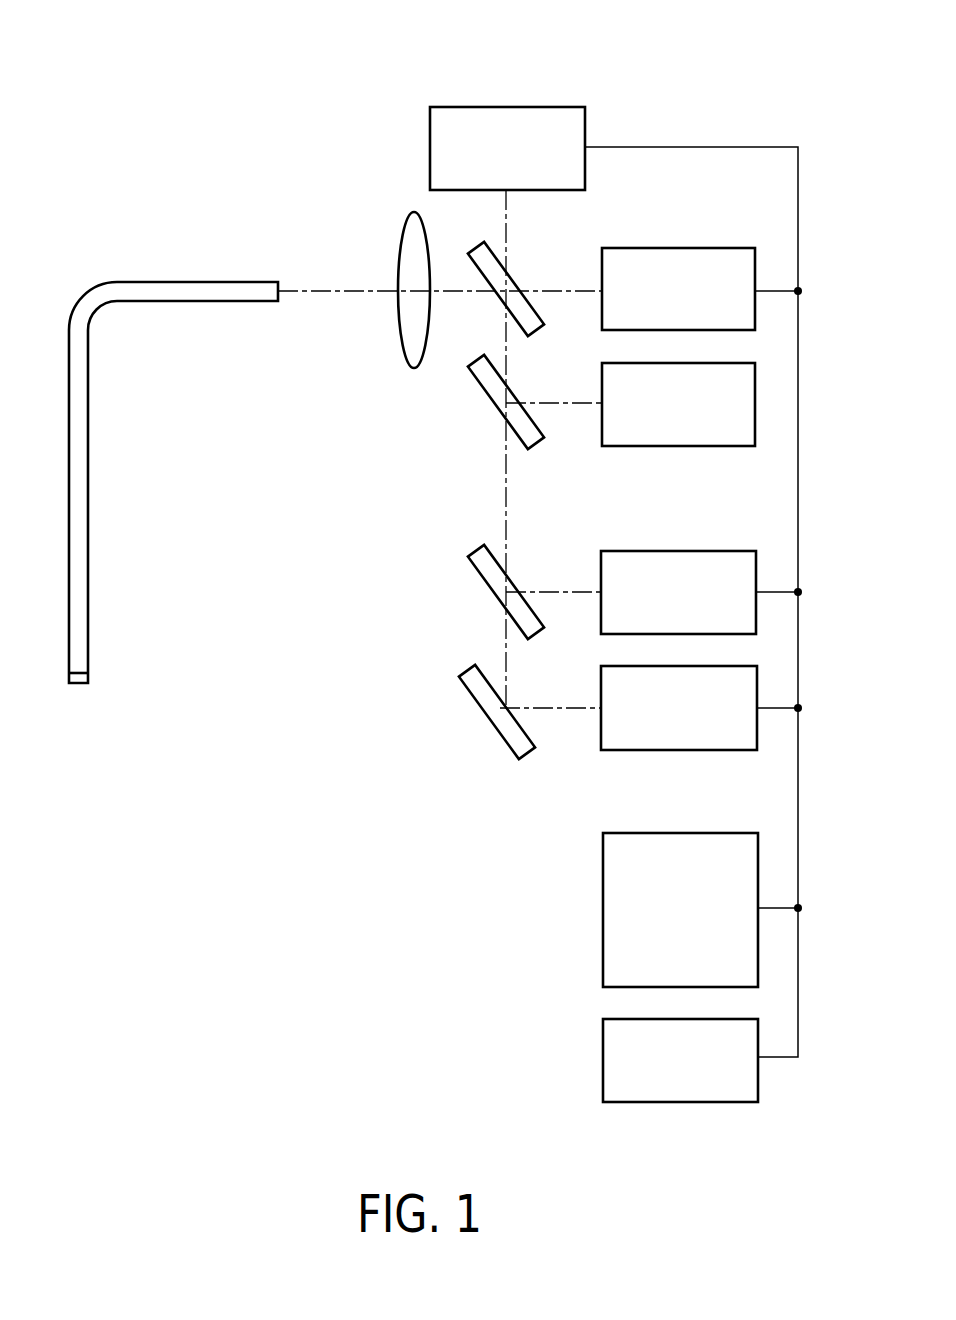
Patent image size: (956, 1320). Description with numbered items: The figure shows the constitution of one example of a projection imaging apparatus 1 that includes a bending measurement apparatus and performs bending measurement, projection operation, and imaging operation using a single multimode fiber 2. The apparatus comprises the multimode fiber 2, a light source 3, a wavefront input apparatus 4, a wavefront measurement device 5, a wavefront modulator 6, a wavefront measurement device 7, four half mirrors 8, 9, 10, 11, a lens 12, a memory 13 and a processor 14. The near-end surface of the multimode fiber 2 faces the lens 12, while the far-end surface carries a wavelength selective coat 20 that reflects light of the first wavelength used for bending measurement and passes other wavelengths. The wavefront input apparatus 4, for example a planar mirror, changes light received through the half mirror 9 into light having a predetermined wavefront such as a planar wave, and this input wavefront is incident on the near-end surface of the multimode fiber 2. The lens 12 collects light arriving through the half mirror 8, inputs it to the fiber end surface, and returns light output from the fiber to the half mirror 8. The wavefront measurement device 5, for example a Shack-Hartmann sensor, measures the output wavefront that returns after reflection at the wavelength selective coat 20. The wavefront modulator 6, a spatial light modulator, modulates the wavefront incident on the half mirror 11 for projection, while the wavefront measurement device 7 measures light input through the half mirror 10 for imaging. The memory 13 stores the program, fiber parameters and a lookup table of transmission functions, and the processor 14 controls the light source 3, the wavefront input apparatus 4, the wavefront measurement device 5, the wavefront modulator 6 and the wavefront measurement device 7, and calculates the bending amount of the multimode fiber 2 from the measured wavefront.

The projection imaging apparatus 1 is at (684, 50).
The multimode fiber 2 is at (215, 282).
The light source 3 is at (545, 107).
The wavefront input apparatus 4 is at (717, 363).
The wavefront measurement device 5 is at (717, 248).
The wavefront modulator 6 is at (717, 666).
The wavefront measurement device 7 is at (717, 551).
The half mirror 8 is at (540, 332).
The half mirror 9 is at (540, 445).
The half mirror 10 is at (540, 634).
The half mirror 11 is at (532, 752).
The lens 12 is at (398, 236).
The memory 13 is at (717, 833).
The processor 14 is at (717, 1019).
The wavelength selective coat 20 is at (90, 677).